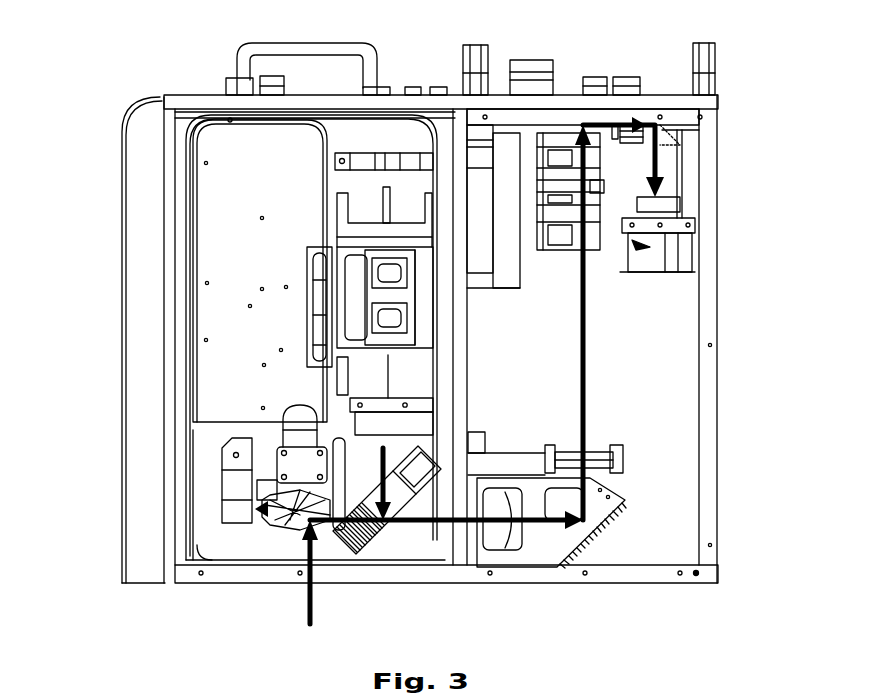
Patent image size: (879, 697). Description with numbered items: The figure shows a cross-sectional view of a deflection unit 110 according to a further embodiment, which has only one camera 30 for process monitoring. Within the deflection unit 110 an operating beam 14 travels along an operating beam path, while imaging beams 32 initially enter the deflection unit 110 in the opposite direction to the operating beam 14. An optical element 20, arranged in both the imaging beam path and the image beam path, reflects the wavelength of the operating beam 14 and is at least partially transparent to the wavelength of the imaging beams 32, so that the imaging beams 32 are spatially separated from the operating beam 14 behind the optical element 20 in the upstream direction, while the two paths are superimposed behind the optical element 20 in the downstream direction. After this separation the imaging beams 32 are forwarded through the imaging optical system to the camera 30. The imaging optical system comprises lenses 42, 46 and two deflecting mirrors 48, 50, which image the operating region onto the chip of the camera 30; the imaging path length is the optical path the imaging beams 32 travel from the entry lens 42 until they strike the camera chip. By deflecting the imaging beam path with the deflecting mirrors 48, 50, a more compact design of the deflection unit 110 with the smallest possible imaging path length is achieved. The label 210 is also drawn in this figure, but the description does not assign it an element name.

The deflection unit 110 is at (587, 59).
The deflecting mirror 48 is at (583, 117).
The lens 46 is at (633, 122).
The deflecting mirror 50 is at (667, 132).
The camera 30 is at (695, 250).
The lens 42 is at (623, 462).
The optical element 20 is at (373, 550).
The operating beam 14 is at (263, 517).
The imaging beams 32 is at (318, 585).
The controller 210 is at (680, 696).